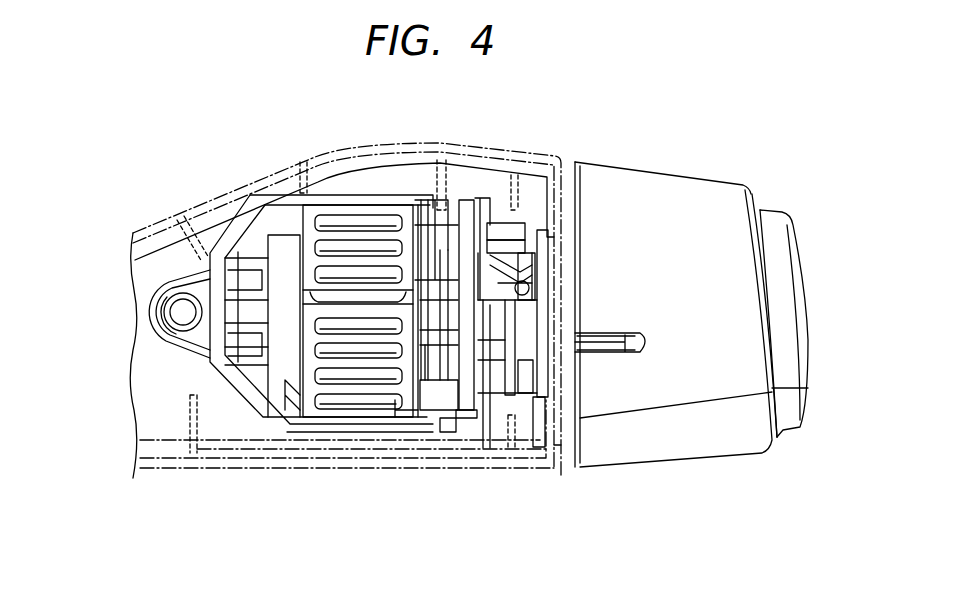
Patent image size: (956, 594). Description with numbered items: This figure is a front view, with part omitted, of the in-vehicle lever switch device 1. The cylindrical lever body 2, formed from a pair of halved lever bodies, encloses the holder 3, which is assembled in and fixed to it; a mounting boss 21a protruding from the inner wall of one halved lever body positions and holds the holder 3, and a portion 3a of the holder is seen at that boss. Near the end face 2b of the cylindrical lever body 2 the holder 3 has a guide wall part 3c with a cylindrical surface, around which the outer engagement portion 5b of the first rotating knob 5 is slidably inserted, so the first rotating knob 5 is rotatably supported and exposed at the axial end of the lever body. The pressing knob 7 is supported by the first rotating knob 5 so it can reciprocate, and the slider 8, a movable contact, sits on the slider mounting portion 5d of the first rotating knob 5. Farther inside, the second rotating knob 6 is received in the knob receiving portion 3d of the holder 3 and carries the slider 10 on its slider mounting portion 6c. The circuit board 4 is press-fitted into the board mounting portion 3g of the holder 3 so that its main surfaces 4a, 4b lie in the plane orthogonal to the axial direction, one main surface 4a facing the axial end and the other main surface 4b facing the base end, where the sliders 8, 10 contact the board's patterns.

The lever switch device 1 is at (185, 183).
The cylindrical lever body 2 is at (263, 160).
The end face 2b is at (563, 443).
The holder 3 is at (257, 405).
The frame boss 3a is at (163, 322).
The guide wall part 3c is at (527, 275).
The knob receiving portion 3d is at (407, 207).
The board mounting portion 3g is at (451, 428).
The circuit board 4 is at (467, 418).
The main surface 4a is at (498, 400).
The main surface 4b is at (432, 385).
The first rotating knob 5 is at (645, 178).
The outer engagement portion 5b is at (543, 237).
The slider mounting portion 5d is at (513, 407).
The second rotating knob 6 is at (360, 233).
The slider mounting portion 6c is at (398, 410).
The pressing knob 7 is at (770, 215).
The slider 8 is at (498, 252).
The slider 10 is at (453, 257).
The mounting boss 21a is at (175, 312).